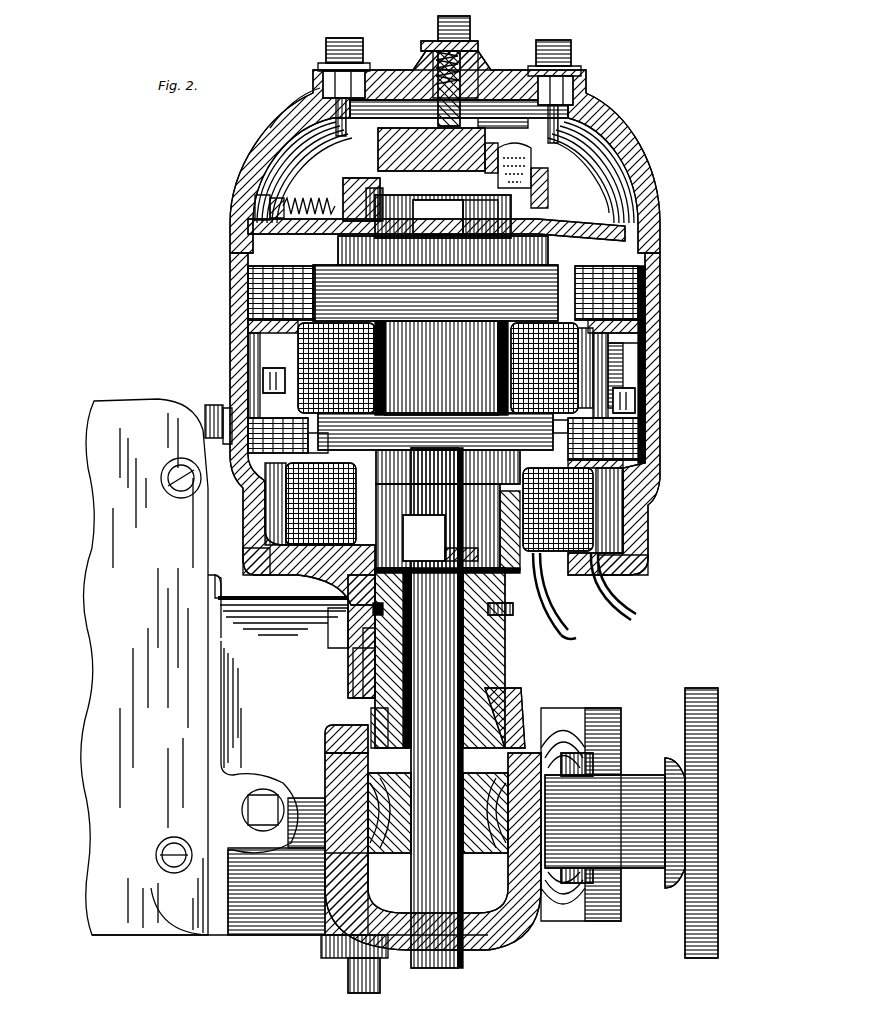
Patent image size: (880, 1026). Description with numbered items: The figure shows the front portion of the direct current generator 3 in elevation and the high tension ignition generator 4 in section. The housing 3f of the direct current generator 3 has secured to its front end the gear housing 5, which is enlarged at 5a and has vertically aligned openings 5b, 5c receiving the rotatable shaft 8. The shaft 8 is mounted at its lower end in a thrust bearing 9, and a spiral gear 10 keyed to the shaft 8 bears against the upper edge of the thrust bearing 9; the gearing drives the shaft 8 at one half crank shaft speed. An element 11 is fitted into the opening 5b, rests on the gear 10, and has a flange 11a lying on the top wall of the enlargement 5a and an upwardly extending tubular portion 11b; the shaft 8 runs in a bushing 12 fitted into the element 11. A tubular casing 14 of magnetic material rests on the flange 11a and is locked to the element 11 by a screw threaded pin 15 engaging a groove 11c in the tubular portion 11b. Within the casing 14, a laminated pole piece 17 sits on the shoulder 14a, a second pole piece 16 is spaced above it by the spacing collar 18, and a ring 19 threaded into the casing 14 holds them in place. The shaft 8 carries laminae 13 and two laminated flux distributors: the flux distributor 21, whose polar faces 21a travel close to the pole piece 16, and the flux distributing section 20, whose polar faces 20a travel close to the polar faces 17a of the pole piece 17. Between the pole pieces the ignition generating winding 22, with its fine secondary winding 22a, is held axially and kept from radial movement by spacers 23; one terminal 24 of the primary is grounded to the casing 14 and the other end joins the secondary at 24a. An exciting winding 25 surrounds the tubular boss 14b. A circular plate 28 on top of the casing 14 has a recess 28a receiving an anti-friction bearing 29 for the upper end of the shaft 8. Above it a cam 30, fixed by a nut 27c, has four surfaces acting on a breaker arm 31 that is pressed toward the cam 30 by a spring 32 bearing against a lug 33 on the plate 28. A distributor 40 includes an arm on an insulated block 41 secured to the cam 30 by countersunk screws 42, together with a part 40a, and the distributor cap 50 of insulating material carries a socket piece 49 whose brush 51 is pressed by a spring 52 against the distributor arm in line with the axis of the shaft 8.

The direct current generator 3 is at (96, 392).
The housing 3f is at (160, 928).
The high tension ignition generator 4 is at (205, 218).
The gear housing 5 is at (318, 745).
The enlarged section of gear casing 5a is at (355, 690).
The upper opening 5b is at (355, 697).
The lower opening 5c is at (335, 875).
The rotatable shaft 8 is at (422, 940).
The thrust bearing 9 is at (478, 934).
The gear 10 is at (332, 780).
The supporting element 11 is at (500, 655).
The flange 11a is at (350, 660).
The tubular portion 11b is at (340, 632).
The groove 11c is at (340, 590).
The bushing 12 is at (505, 634).
The laminae 13 is at (412, 500).
The tubular casing 14 is at (240, 352).
The shoulder or seat 14a is at (640, 468).
The tubular boss 14b is at (418, 528).
The screw threaded pin 15 is at (548, 620).
The upper pole piece 16 is at (240, 272).
The lower pole piece 17 is at (652, 430).
The polar face 17a is at (439, 445).
The spacing collar 18 is at (240, 330).
The ring 19 is at (240, 242).
The flux distributing section 20 is at (441, 398).
The polar face 20a is at (435, 448).
The flux distributor 21 is at (360, 262).
The polar face 21a is at (443, 250).
The ignition generating winding 22 is at (652, 372).
The secondary winding 22a is at (652, 356).
The spacers 23 is at (240, 372).
The primary winding terminal 24 is at (652, 302).
The primary-secondary connection 24a is at (240, 316).
The exciting winding 25 is at (238, 552).
The nut 27c is at (368, 172).
The circular plate 28 is at (550, 222).
The recess 28a is at (400, 222).
The anti-friction bearing 29 is at (473, 217).
The cam 30 is at (542, 185).
The breaker arm 31 is at (305, 184).
The spring 32 is at (292, 195).
The lug 33 is at (230, 190).
The distributor 40 is at (612, 150).
The terminal post 40a is at (320, 30).
The insulated block 41 is at (470, 140).
The screws 42 is at (523, 165).
The socket piece 49 is at (430, 26).
The distributor cap 50 is at (268, 115).
The brush 51 is at (475, 58).
The spring 52 is at (515, 28).